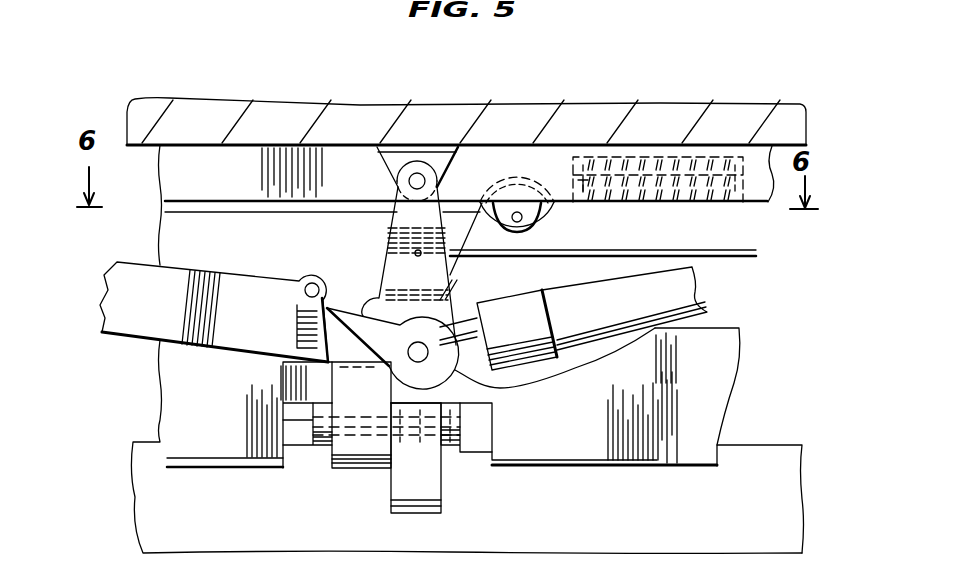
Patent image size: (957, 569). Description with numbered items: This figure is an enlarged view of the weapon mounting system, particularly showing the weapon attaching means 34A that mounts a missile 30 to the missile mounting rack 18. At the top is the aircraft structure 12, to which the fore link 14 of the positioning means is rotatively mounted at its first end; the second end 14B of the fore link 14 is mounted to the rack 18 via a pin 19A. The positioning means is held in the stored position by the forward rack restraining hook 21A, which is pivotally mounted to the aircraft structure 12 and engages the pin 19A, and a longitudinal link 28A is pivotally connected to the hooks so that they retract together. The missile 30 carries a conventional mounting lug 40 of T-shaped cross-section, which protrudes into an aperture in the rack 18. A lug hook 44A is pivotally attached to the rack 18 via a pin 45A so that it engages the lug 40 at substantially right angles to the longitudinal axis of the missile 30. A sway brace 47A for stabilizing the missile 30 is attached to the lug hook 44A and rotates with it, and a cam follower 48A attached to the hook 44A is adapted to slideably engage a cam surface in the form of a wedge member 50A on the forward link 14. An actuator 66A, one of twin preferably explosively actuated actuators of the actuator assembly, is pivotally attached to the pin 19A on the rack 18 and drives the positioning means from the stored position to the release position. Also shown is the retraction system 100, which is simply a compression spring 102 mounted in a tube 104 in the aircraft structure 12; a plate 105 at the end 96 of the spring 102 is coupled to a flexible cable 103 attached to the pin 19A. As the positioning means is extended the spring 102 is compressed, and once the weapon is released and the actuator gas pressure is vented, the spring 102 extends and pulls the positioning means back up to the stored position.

The aircraft structure 12 is at (556, 102).
The fore link 14 is at (122, 270).
The second end of fore link 14B is at (240, 299).
The missile mounting rack 18 is at (740, 347).
The pin 19A is at (420, 355).
The forward rack restraining hook 21A is at (425, 163).
The longitudinal link 28A is at (752, 255).
The missile 30 is at (775, 445).
The forward weapon attaching means 34A is at (284, 472).
The mounting lug 40 is at (283, 422).
The lug hook 44A is at (353, 470).
The pin 45A is at (457, 421).
The sway brace 47A is at (443, 502).
The cam follower 48A is at (343, 379).
The wedge member 50A is at (334, 350).
The actuator 66A is at (695, 287).
The end of spring 96 is at (597, 208).
The retraction system 100 is at (715, 155).
The compression spring 102 is at (636, 154).
The flexible cable 103 is at (460, 269).
The tube 104 is at (744, 170).
The plate 105 is at (540, 230).